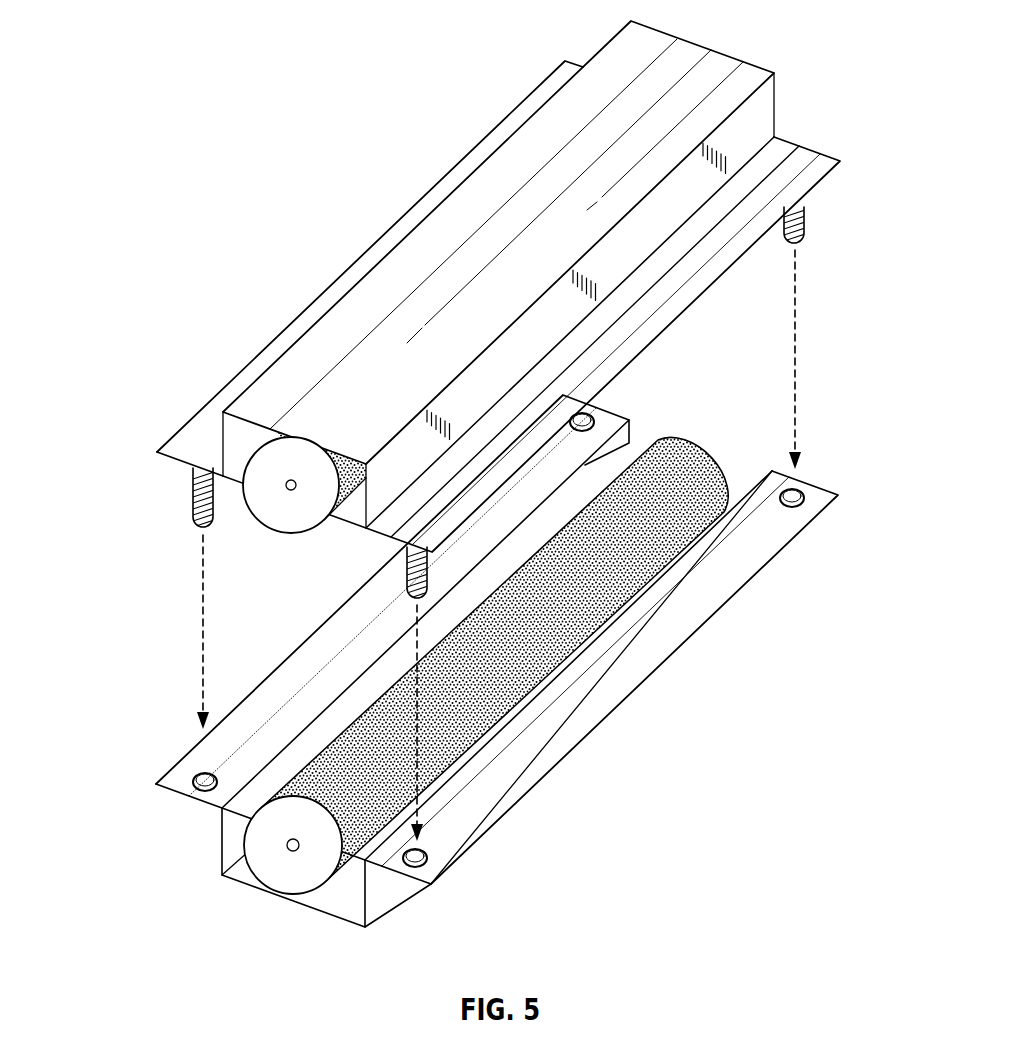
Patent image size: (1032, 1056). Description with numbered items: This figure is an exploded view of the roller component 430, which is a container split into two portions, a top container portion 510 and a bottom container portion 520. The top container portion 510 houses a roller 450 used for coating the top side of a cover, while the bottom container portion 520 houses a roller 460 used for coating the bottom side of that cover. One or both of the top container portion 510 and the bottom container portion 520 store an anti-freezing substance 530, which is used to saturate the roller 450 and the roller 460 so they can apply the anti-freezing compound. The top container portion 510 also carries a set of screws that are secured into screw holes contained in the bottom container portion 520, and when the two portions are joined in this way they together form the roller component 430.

The roller component 430 is at (120, 198).
The top container portion 510 is at (775, 116).
The bottom container portion 520 is at (836, 497).
The anti-freezing substance 530 is at (335, 899).
The roller 450 is at (288, 520).
The roller 460 is at (285, 875).